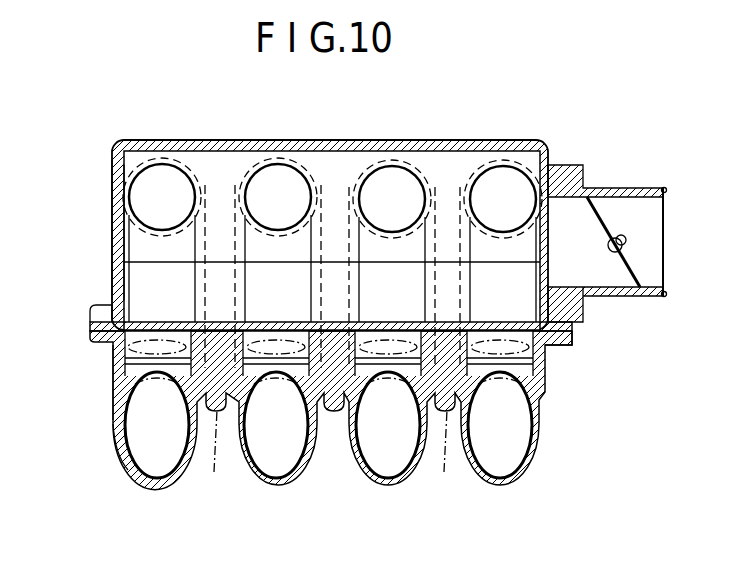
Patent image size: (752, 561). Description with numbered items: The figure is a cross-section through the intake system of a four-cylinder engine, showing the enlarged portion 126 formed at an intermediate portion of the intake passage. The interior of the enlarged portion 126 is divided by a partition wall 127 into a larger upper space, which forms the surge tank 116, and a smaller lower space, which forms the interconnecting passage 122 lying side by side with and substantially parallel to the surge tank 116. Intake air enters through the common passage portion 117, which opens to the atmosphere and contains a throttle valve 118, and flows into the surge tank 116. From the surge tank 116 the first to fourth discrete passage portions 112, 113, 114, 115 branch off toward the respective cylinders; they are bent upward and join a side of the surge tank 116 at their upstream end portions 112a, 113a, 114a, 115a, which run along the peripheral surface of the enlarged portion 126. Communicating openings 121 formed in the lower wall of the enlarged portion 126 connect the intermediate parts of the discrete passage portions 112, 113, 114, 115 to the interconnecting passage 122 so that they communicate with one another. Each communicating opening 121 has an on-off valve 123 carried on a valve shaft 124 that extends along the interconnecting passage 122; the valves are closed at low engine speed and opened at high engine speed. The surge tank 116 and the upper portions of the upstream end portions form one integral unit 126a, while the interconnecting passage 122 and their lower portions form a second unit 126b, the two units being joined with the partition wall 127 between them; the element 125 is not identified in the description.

The first discrete passage portion 112 is at (156, 446).
The second discrete passage portion 113 is at (280, 444).
The third discrete passage portion 114 is at (393, 446).
The fourth discrete passage portion 115 is at (503, 445).
The upstream end portion 112a is at (162, 172).
The upstream end portion 113a is at (280, 177).
The upstream end portion 114a is at (397, 180).
The upstream end portion 115a is at (502, 180).
The surge tank 116 is at (137, 272).
The common passage portion 117 is at (628, 190).
The throttle valve 118 is at (625, 285).
The communicating opening 121 is at (130, 360).
The interconnecting passage 122 is at (93, 332).
The on-off valve 123 is at (122, 383).
The valve shaft 124 is at (566, 349).
The side wall 125 is at (116, 374).
The enlarged portion 126 is at (137, 132).
The unit 126a is at (114, 172).
The unit 126b is at (119, 440).
The partition wall 127 is at (112, 305).